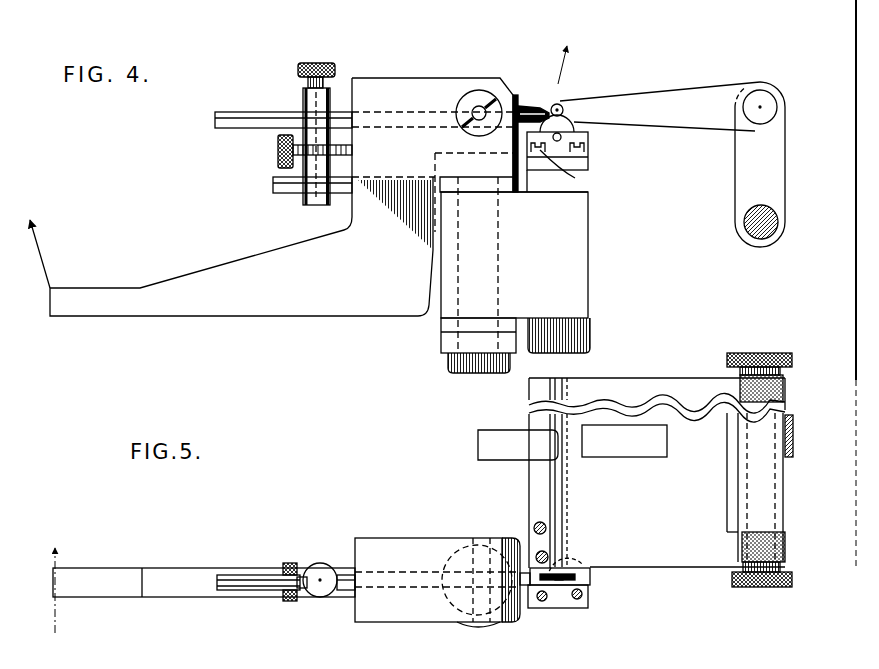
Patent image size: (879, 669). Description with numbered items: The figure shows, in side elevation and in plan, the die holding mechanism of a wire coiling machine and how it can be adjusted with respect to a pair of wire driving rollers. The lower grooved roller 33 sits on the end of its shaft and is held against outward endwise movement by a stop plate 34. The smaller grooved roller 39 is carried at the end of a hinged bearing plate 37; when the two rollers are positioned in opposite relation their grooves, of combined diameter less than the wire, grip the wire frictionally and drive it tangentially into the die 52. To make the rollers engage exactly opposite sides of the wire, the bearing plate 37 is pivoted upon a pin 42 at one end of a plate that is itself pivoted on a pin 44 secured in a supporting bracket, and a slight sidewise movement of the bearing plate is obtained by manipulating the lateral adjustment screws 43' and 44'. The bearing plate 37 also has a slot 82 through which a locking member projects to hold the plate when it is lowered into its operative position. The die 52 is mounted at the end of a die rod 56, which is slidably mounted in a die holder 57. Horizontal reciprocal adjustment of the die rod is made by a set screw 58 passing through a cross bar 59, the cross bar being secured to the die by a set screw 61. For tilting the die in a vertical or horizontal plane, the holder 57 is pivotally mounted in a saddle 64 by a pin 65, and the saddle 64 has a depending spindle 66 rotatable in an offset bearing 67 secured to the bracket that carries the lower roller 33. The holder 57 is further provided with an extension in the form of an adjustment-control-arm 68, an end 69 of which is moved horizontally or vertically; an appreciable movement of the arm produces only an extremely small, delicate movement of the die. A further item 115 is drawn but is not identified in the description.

In FIG. 4, the grooved roller 33 is at (575, 124).
In FIG. 5, the grooved roller 33 is at (578, 578).
In FIG. 4, the stop plate 34 is at (590, 150).
In FIG. 4, the hinged bearing plate 37 is at (645, 95).
In FIG. 5, the hinged bearing plate 37 is at (703, 557).
In FIG. 4, the grooved roller 39 is at (562, 105).
In FIG. 5, the grooved roller 39 is at (566, 573).
In FIG. 4, the pin 42 is at (758, 89).
In FIG. 5, the pin 42 is at (748, 478).
In FIG. 5, the lateral adjustment screw 43' is at (762, 575).
In FIG. 4, the pin 44 is at (737, 225).
In FIG. 5, the lateral adjustment screw 44' is at (759, 360).
In FIG. 4, the die 52 is at (548, 108).
In FIG. 5, the die 52 is at (550, 588).
In FIG. 4, the die rod 56 is at (257, 112).
In FIG. 5, the die rod 56 is at (247, 575).
In FIG. 4, the die holder 57 is at (470, 155).
In FIG. 5, the die holder 57 is at (393, 575).
In FIG. 4, the set screw 58 is at (278, 161).
In FIG. 5, the set screw 58 is at (293, 563).
In FIG. 4, the cross bar 59 is at (330, 167).
In FIG. 4, the set screw 61 is at (323, 64).
In FIG. 5, the set screw 61 is at (321, 566).
In FIG. 4, the saddle 64 is at (382, 191).
In FIG. 5, the saddle 64 is at (413, 616).
In FIG. 4, the pin 65 is at (480, 92).
In FIG. 5, the pin 65 is at (477, 580).
In FIG. 4, the depending spindle 66 is at (457, 306).
In FIG. 4, the offset bearing 67 is at (583, 257).
In FIG. 4, the adjustment-control-arm 68 is at (313, 303).
In FIG. 5, the adjustment-control-arm 68 is at (243, 598).
In FIG. 4, the end 69 is at (53, 320).
In FIG. 5, the end 69 is at (75, 598).
In FIG. 5, the slot 82 is at (637, 448).
In FIG. 4, the spring 115 is at (552, 150).